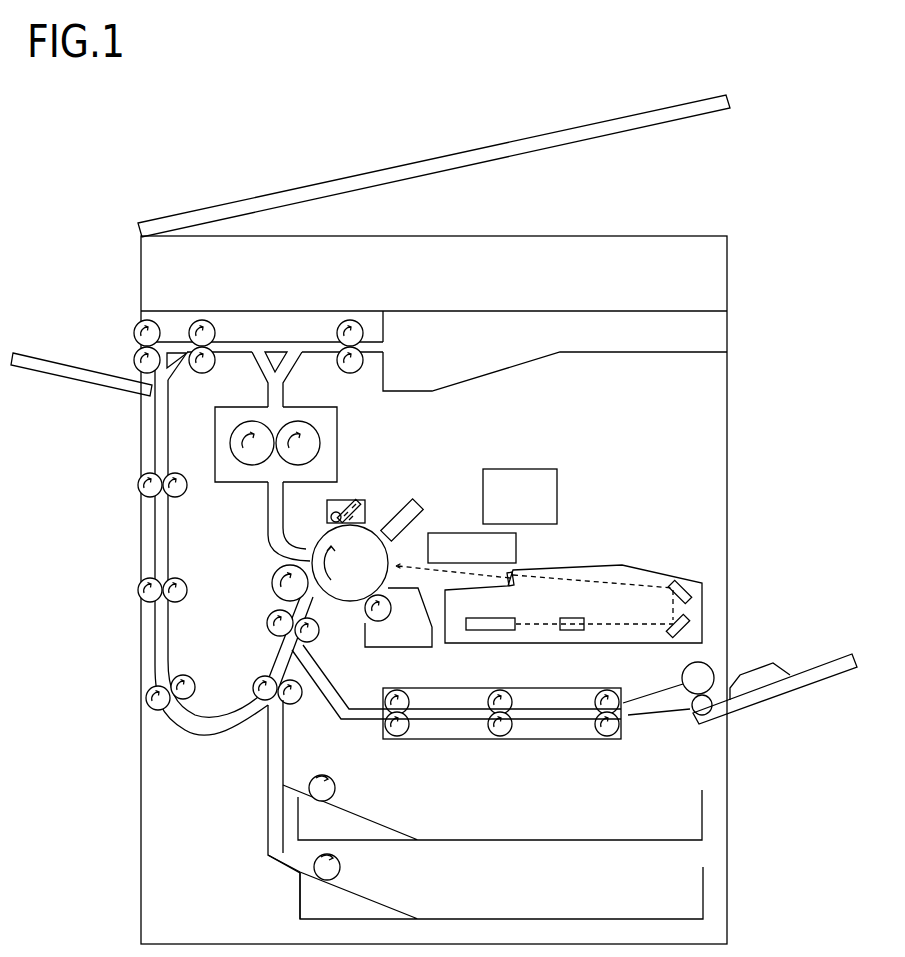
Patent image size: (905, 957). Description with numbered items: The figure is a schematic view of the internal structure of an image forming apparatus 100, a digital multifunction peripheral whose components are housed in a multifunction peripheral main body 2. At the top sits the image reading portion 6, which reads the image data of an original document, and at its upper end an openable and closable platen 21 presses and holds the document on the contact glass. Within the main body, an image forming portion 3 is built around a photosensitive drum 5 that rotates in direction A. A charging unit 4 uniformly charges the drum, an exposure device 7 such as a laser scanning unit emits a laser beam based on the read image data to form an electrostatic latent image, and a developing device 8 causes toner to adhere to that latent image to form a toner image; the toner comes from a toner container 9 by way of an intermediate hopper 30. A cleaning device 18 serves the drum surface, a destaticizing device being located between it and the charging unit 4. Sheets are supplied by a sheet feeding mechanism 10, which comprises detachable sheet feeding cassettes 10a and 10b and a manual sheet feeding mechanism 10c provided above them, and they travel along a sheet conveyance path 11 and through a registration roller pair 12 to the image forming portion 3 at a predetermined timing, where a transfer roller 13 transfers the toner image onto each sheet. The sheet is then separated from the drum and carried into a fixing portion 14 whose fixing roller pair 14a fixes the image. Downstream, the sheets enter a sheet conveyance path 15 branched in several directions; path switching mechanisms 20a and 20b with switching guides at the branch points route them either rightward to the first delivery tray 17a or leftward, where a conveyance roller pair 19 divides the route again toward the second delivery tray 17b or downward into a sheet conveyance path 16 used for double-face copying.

The image forming apparatus 100 is at (763, 255).
The multifunction peripheral main body 2 is at (740, 412).
The image reading portion 6 is at (573, 257).
The platen 21 is at (318, 184).
The first delivery tray 17a is at (434, 351).
The second delivery tray 17b is at (57, 368).
The conveyance roller pair 19 is at (203, 327).
The path switching mechanism 20a is at (274, 346).
The path switching mechanism 20b is at (150, 370).
The sheet conveyance path 15 is at (267, 388).
The fixing portion 14 is at (215, 437).
The fixing roller pair 14a is at (318, 436).
The sheet conveyance path 16 is at (160, 523).
The cleaning device 18 is at (350, 500).
The image forming portion 3 is at (404, 477).
The charging unit 4 is at (408, 508).
The toner container 9 is at (545, 469).
The intermediate hopper 30 is at (517, 549).
The exposure device 7 is at (603, 566).
The photosensitive drum 5 is at (337, 590).
The developing device 8 is at (398, 634).
The transfer roller 13 is at (273, 588).
The registration roller pair 12 is at (268, 622).
The sheet conveyance path 11 is at (273, 732).
The sheet feeding mechanism 10 is at (570, 822).
The sheet feeding cassette 10a is at (712, 822).
The sheet feeding cassette 10b is at (717, 900).
The manual sheet feeding mechanism 10c is at (772, 643).